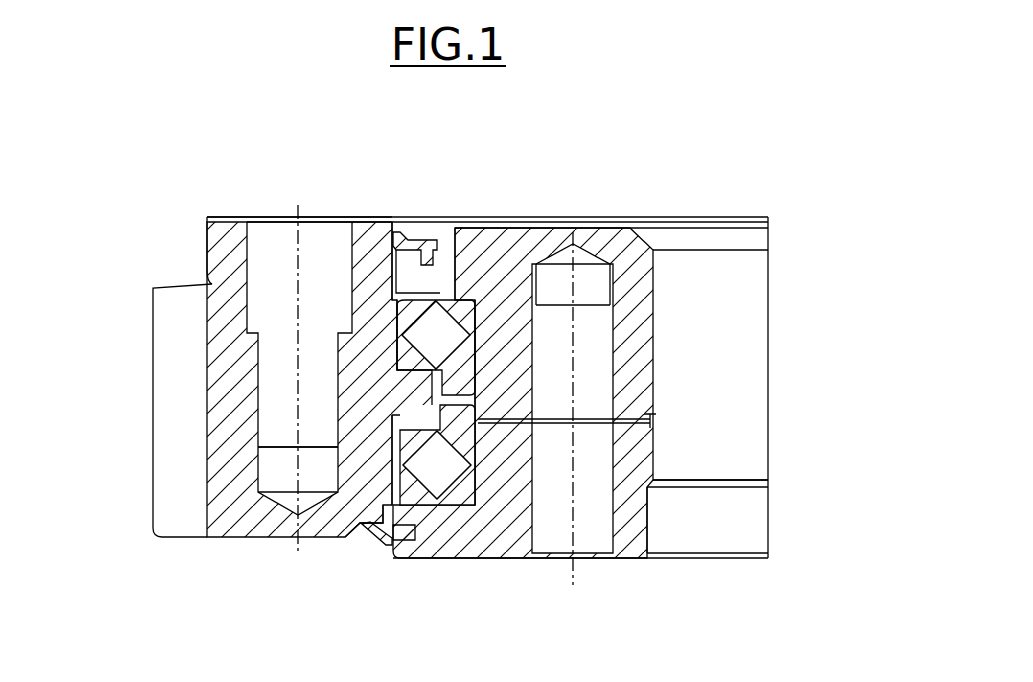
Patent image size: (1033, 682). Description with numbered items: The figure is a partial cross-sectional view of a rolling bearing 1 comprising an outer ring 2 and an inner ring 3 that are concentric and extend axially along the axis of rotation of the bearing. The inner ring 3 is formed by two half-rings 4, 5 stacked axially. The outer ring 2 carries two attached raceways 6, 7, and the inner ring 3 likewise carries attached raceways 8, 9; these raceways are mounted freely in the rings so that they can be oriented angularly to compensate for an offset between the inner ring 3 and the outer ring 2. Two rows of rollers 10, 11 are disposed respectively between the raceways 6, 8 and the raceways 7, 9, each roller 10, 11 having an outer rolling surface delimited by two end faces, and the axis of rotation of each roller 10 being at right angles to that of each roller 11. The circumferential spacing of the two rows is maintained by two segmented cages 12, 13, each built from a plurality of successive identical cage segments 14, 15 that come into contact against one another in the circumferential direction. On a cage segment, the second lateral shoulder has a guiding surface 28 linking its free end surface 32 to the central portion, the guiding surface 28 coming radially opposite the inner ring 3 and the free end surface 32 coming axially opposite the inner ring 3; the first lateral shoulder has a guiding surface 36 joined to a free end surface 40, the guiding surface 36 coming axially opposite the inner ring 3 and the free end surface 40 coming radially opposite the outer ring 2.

The rolling bearing 1 is at (413, 186).
The outer ring 2 is at (205, 243).
The inner ring 3 is at (583, 222).
The half-ring 4 is at (647, 312).
The half-ring 5 is at (637, 525).
The raceway 6 is at (348, 335).
The raceway 7 is at (402, 440).
The raceway 8 is at (474, 354).
The raceway 9 is at (468, 500).
The roller 10 is at (453, 262).
The roller 11 is at (420, 530).
The segmented cage 12 is at (477, 377).
The segmented cage 13 is at (372, 530).
The cage segment 14 is at (468, 300).
The cage segment 15 is at (392, 506).
The guiding surface 28 is at (497, 410).
The free end surface 32 is at (400, 420).
The guiding surface 36 is at (384, 245).
The free end surface 40 is at (408, 252).